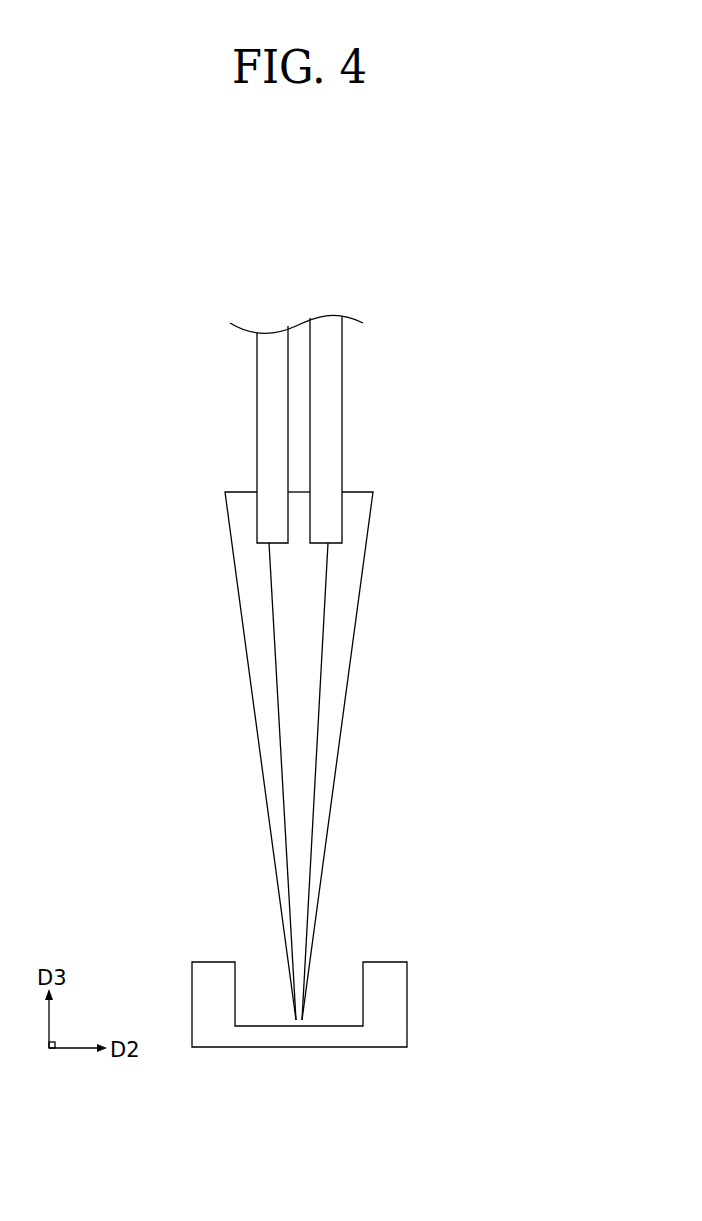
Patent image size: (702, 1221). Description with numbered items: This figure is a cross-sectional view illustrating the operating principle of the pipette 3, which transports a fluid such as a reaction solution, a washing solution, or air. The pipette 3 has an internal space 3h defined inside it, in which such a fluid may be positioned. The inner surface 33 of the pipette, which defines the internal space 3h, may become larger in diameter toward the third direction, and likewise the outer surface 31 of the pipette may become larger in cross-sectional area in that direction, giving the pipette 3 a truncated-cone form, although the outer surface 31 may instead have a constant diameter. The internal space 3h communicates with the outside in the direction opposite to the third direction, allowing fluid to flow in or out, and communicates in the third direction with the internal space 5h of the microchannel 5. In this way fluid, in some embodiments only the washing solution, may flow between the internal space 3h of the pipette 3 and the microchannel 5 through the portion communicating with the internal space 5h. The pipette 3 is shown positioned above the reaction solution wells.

The microchannel 5 is at (342, 385).
The internal space of the microchannel 5h is at (307, 343).
The pipette 3 is at (331, 756).
The outer surface of the pipette 31 is at (357, 627).
The inner surface of the pipette 33 is at (325, 610).
The internal space of the pipette 3h is at (298, 659).